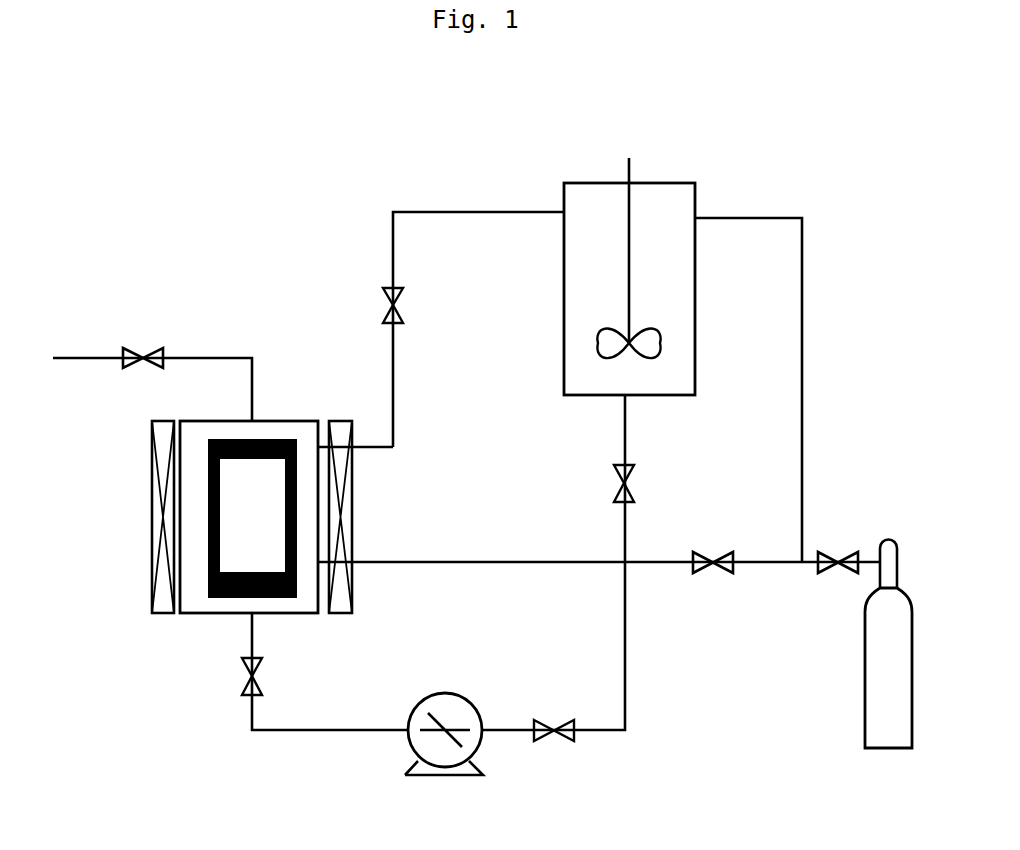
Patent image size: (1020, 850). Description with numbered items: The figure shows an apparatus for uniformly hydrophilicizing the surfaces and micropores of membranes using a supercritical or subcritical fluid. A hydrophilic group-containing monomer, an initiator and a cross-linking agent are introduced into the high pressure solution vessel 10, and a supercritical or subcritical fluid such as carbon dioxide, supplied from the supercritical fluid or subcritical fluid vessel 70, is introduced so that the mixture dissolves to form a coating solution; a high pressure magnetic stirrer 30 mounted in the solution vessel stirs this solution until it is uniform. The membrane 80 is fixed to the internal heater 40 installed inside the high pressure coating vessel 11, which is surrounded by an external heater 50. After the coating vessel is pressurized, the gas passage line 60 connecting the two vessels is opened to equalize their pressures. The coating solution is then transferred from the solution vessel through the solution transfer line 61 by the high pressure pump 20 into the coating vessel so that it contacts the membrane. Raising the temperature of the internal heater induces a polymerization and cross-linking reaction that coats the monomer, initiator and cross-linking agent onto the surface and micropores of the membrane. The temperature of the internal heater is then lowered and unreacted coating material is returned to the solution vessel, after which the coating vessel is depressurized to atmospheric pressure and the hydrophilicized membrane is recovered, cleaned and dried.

The high pressure solution vessel 10 is at (700, 297).
The high pressure magnetic stirrer 30 is at (634, 158).
The gas passage line 60 is at (422, 212).
The solution transfer line 61 is at (629, 699).
The high pressure pump 20 is at (405, 776).
The high pressure coating vessel 11 is at (177, 533).
The external heater 50 is at (150, 613).
The internal heater 40 is at (208, 471).
The membrane 80 is at (288, 478).
The supercritical fluid or subcritical fluid vessel 70 is at (864, 710).